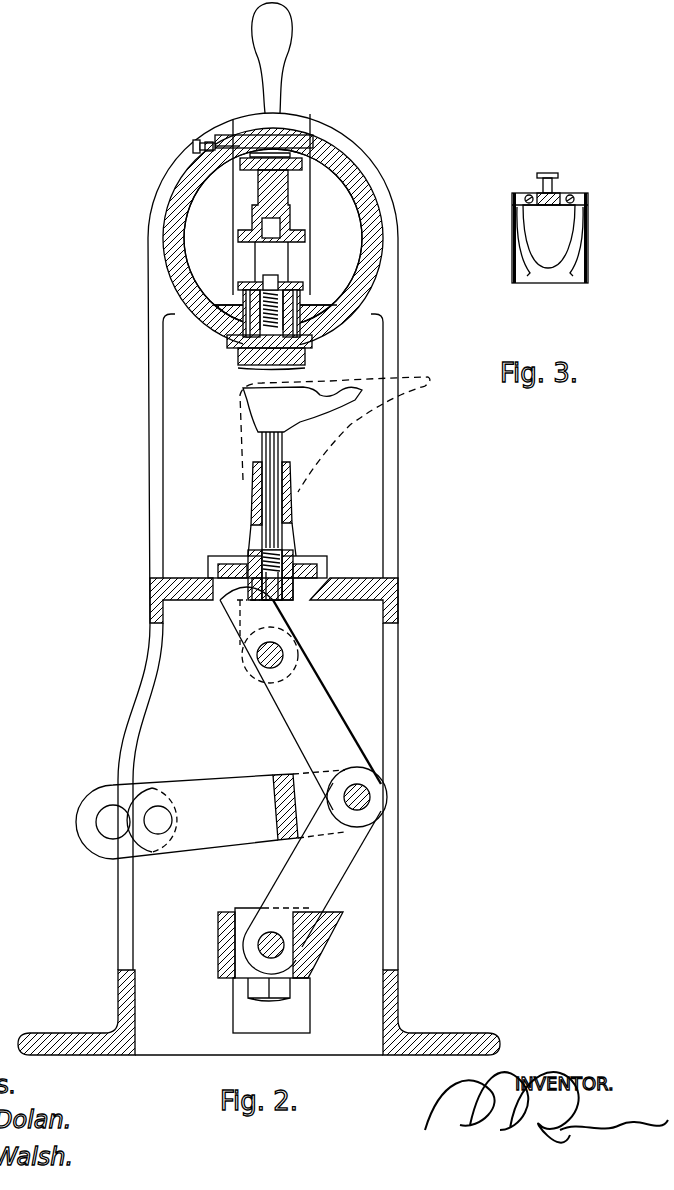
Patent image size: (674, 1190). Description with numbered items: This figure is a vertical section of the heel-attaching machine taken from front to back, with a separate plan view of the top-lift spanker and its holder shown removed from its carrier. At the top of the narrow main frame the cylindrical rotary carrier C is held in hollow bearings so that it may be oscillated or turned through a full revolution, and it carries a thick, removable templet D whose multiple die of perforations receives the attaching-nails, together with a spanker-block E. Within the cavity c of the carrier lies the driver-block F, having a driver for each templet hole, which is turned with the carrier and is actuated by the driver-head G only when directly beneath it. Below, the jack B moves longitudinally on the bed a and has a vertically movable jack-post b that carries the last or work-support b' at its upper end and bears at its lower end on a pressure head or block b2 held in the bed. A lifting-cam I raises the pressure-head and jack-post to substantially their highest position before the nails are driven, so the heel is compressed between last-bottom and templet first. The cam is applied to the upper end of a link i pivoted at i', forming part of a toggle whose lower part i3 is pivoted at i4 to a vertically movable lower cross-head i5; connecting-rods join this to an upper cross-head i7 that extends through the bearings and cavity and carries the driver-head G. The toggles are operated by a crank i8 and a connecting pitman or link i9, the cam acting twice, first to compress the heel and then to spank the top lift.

In FIG. 2, the carrier C is at (273, 238).
In FIG. 2, the cavity c is at (273, 238).
In FIG. 2, the upper cross-head i7 is at (253, 204).
In FIG. 2, the driver-head G is at (290, 212).
In FIG. 2, the driver-block F is at (242, 288).
In FIG. 2, the templet D is at (293, 332).
In FIG. 2, the last or work-support b' is at (335, 434).
In FIG. 2, the jack-post b is at (288, 515).
In FIG. 2, the jack B is at (282, 487).
In FIG. 2, the bed a is at (274, 590).
In FIG. 2, the lifting-cam I is at (250, 588).
In FIG. 2, the pressure head or block b2 is at (273, 600).
In FIG. 2, the pivot i' is at (248, 664).
In FIG. 2, the link i is at (303, 713).
In FIG. 2, the pitman or link i9 is at (210, 814).
In FIG. 2, the crank i8 is at (147, 853).
In FIG. 2, the lower part of toggle i3 is at (312, 878).
In FIG. 2, the pivot i4 is at (280, 938).
In FIG. 2, the lower cross-head i5 is at (218, 935).
In FIG. 3, the spanker-block E is at (588, 250).